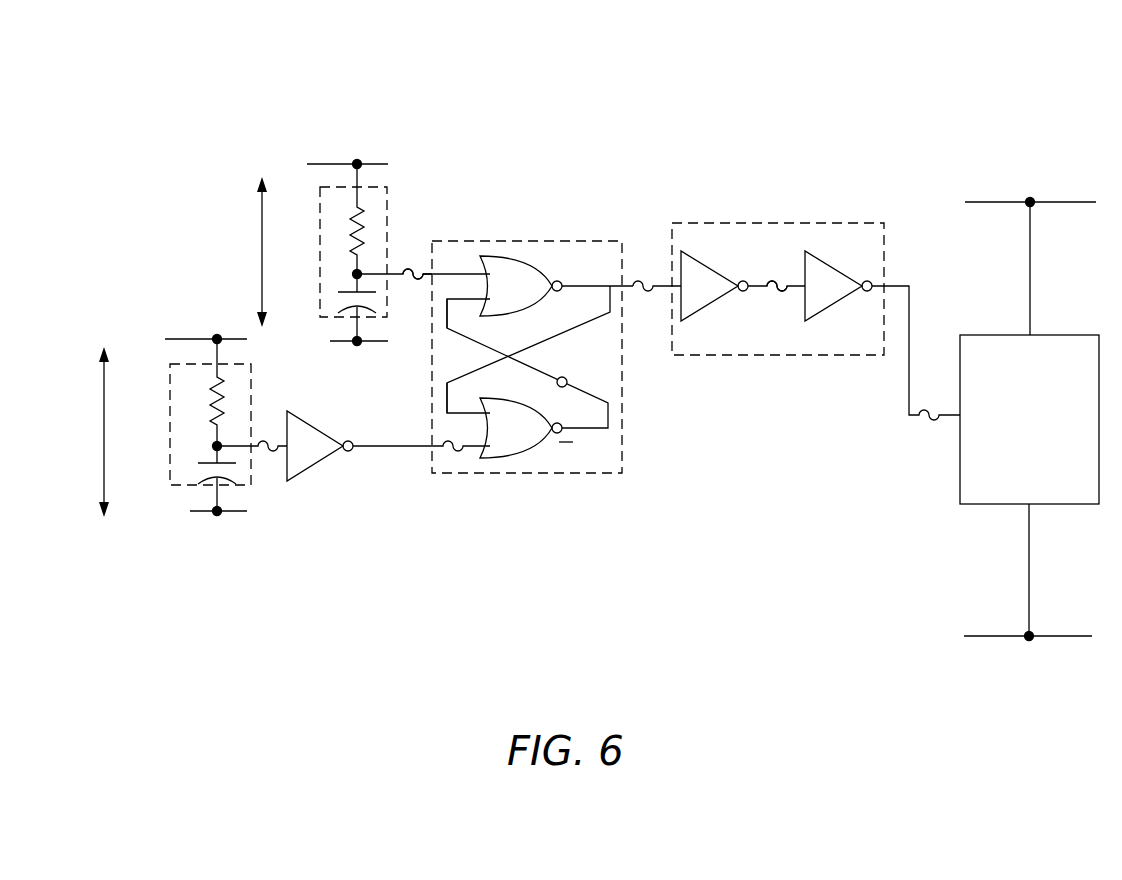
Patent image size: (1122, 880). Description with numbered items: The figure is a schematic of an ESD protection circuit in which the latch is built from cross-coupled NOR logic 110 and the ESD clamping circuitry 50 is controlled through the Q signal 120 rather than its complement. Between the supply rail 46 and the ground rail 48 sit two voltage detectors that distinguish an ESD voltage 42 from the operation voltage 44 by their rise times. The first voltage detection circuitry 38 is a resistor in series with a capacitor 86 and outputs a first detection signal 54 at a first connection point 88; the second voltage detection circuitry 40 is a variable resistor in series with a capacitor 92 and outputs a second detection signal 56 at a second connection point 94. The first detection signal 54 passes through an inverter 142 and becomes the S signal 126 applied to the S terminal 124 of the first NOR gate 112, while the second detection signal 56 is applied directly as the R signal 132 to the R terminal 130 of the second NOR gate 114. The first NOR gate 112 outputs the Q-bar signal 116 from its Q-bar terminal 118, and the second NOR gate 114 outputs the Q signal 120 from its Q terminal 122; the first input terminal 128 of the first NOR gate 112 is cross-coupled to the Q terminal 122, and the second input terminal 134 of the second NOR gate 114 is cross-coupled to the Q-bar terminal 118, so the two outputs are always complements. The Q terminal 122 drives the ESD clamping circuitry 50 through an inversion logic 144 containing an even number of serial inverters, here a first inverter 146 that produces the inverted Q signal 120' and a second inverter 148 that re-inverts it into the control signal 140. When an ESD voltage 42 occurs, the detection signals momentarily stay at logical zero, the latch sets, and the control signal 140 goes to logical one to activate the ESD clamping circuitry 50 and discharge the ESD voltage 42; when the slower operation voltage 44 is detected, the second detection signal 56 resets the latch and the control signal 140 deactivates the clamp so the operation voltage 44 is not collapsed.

The first voltage detection circuitry 38 is at (180, 428).
The second voltage detection circuitry 40 is at (326, 252).
The ESD voltage 42 is at (104, 418).
The operation voltage 44 is at (262, 222).
The supply rail 46 is at (310, 164).
The ground rail 48 is at (334, 342).
The ESD clamping circuitry 50 is at (1018, 470).
The first detection signal 54 is at (263, 441).
The second detection signal 56 is at (405, 270).
The capacitor 86 is at (198, 470).
The first connection point 88 is at (198, 446).
The capacitor 92 is at (333, 298).
The second connection point 94 is at (335, 274).
The cross-coupled NOR logic 110 is at (566, 356).
The first NOR gate 112 is at (529, 440).
The second NOR gate 114 is at (529, 293).
The Q-bar signal 116 is at (565, 376).
The Q-bar terminal 118 is at (587, 432).
The Q signal 120 is at (791, 350).
The inverted Q signal 120' is at (766, 260).
The Q terminal 122 is at (572, 286).
The S terminal 124 is at (380, 448).
The S signal 126 is at (455, 452).
The first input terminal 128 is at (449, 393).
The R terminal 130 is at (444, 274).
The R signal 132 is at (413, 270).
The second input terminal 134 is at (449, 322).
The control signal 140 is at (940, 420).
The inverter 142 is at (320, 456).
The inversion logic 144 is at (778, 269).
The first inverter 146 is at (716, 297).
The second inverter 148 is at (840, 297).